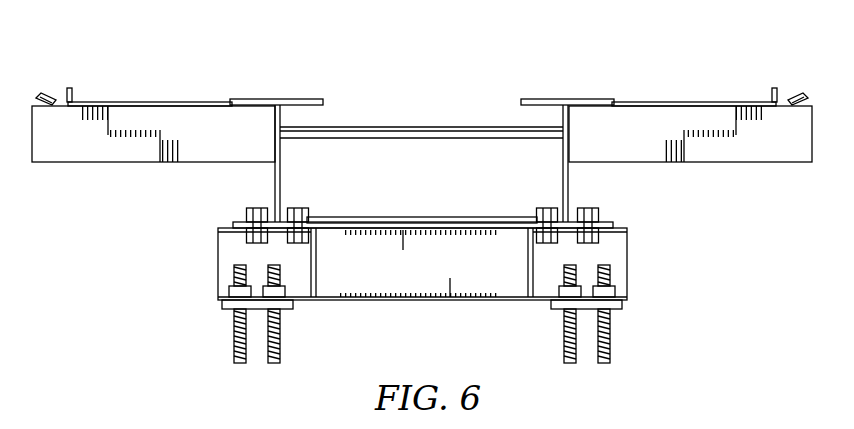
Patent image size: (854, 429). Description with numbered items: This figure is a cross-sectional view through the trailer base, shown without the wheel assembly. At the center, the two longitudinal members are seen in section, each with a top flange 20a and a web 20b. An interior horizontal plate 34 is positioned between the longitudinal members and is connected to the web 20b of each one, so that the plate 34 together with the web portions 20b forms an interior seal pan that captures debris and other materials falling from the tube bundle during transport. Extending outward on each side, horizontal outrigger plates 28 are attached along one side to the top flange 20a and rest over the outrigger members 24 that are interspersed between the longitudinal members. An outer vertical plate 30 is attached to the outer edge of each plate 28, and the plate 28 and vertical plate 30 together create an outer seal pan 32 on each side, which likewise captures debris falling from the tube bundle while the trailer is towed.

The top flange 20a is at (293, 98).
The web 20b is at (282, 117).
The outrigger member 24 is at (95, 142).
The horizontal outrigger plate 28 is at (168, 100).
The outer vertical plate 30 is at (67, 88).
The outer seal pan 32 is at (421, 108).
The interior horizontal plate 34 is at (422, 195).